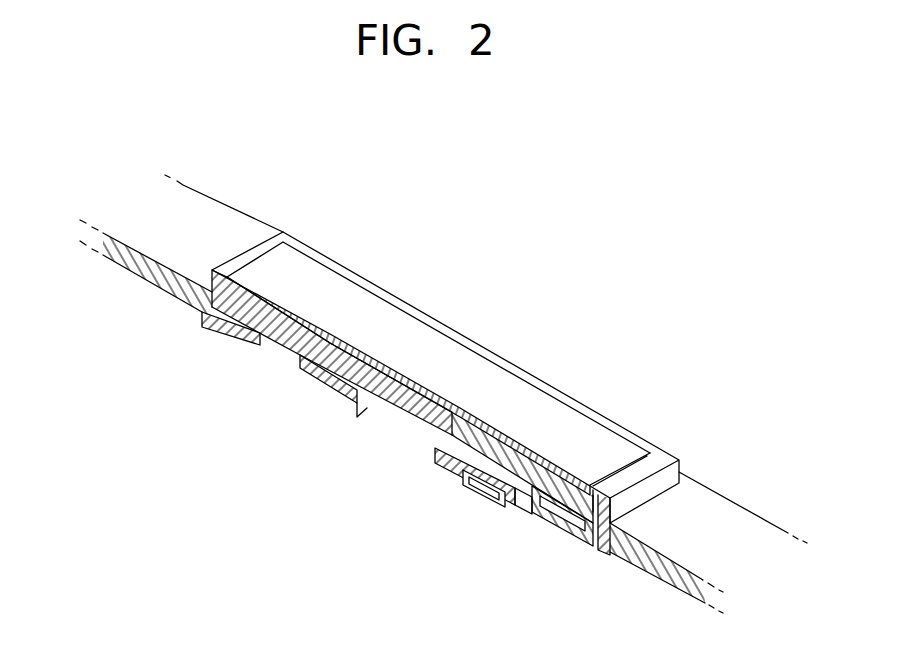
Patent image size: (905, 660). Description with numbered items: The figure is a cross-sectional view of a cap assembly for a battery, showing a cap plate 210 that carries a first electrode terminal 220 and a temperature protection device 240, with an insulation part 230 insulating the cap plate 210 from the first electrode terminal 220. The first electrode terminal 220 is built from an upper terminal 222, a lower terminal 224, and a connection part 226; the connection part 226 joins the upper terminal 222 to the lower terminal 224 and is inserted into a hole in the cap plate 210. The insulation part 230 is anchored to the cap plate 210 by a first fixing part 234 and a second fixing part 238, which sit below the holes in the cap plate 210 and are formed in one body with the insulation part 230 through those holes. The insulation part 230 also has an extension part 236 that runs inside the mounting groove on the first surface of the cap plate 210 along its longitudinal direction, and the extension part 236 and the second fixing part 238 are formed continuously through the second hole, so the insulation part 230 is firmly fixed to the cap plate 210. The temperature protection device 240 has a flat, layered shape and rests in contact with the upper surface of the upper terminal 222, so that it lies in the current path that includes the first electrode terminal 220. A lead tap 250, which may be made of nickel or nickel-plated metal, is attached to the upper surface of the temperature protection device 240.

The cap plate 210 is at (225, 227).
The first electrode terminal 220 is at (512, 585).
The upper terminal 222 is at (562, 505).
The lower terminal 224 is at (490, 488).
The connection part 226 is at (517, 496).
The insulation part 230 is at (676, 443).
The first fixing part 234 is at (437, 463).
The extension part 236 is at (329, 387).
The second fixing part 238 is at (245, 345).
The temperature protection device 240 is at (532, 470).
The lead tap 250 is at (435, 343).